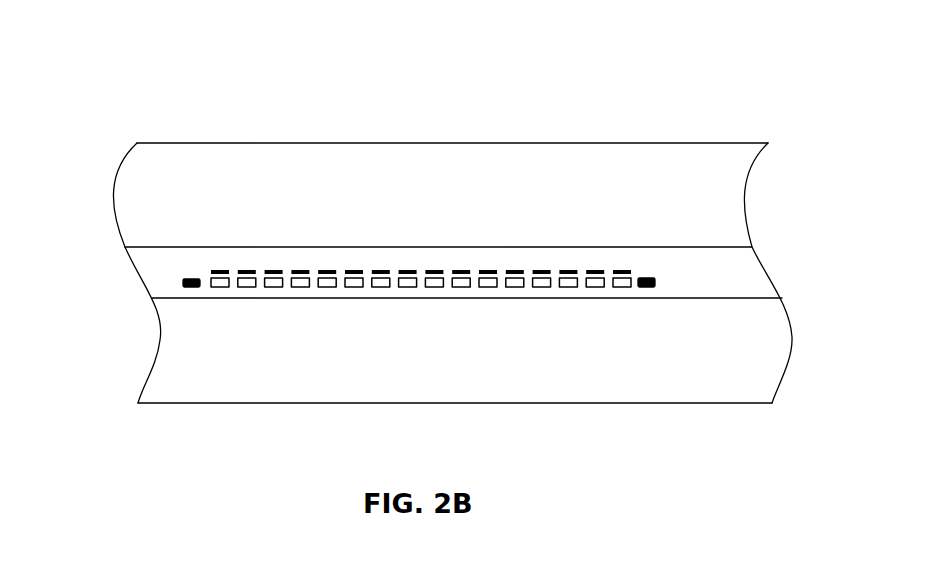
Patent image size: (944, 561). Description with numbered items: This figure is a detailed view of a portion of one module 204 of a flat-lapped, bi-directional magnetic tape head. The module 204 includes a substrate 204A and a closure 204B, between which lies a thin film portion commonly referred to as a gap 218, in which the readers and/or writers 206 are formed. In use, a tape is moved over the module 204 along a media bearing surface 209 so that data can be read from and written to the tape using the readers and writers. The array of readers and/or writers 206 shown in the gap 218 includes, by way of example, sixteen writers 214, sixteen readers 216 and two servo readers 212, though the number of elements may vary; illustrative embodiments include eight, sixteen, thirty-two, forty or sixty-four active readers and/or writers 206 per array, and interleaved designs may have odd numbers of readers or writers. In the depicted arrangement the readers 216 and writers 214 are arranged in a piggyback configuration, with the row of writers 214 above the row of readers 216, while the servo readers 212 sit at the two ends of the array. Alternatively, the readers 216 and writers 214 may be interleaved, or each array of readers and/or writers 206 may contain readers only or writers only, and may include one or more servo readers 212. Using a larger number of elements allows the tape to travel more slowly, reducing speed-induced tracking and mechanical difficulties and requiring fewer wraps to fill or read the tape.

The module 204 is at (152, 123).
The substrate 204A is at (243, 143).
The closure 204B is at (298, 405).
The media bearing surface 209 is at (377, 213).
The readers and/or writers 206 is at (670, 272).
The writers 214 is at (540, 270).
The readers 216 is at (540, 287).
The servo readers 212 is at (183, 283).
The gap 218 is at (770, 272).